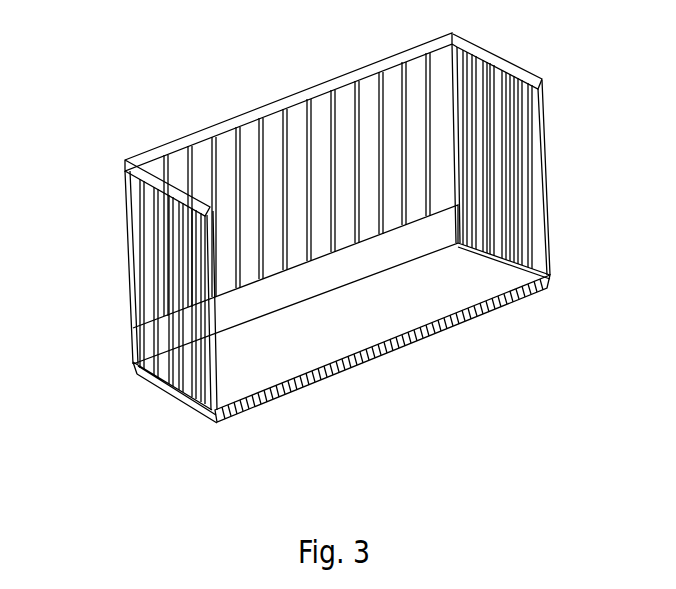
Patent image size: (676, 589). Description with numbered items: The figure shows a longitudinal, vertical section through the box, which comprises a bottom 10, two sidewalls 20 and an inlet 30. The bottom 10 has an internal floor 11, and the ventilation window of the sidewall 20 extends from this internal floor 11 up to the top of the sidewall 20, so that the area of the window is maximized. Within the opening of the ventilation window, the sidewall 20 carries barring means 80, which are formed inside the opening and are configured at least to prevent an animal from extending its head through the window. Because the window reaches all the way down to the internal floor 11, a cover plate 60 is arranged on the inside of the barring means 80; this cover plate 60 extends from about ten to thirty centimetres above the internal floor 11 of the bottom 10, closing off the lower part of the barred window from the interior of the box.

The bottom 10 is at (207, 415).
The internal floor 11 is at (457, 285).
The sidewall 20 is at (392, 56).
The inlet 30 is at (133, 362).
The cover plate 60 is at (287, 293).
The barring means 80 is at (352, 168).